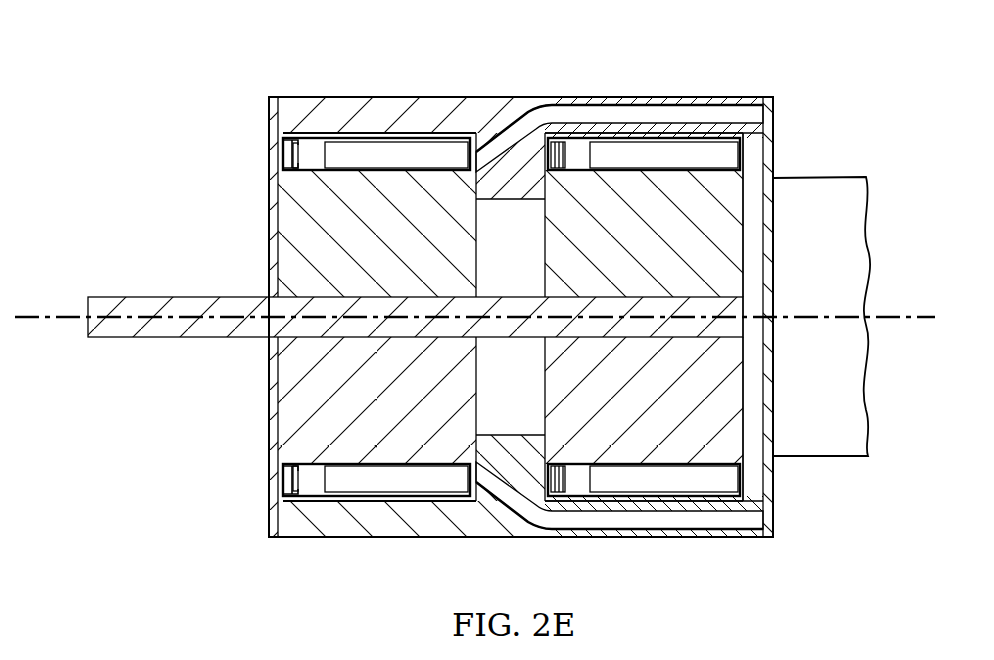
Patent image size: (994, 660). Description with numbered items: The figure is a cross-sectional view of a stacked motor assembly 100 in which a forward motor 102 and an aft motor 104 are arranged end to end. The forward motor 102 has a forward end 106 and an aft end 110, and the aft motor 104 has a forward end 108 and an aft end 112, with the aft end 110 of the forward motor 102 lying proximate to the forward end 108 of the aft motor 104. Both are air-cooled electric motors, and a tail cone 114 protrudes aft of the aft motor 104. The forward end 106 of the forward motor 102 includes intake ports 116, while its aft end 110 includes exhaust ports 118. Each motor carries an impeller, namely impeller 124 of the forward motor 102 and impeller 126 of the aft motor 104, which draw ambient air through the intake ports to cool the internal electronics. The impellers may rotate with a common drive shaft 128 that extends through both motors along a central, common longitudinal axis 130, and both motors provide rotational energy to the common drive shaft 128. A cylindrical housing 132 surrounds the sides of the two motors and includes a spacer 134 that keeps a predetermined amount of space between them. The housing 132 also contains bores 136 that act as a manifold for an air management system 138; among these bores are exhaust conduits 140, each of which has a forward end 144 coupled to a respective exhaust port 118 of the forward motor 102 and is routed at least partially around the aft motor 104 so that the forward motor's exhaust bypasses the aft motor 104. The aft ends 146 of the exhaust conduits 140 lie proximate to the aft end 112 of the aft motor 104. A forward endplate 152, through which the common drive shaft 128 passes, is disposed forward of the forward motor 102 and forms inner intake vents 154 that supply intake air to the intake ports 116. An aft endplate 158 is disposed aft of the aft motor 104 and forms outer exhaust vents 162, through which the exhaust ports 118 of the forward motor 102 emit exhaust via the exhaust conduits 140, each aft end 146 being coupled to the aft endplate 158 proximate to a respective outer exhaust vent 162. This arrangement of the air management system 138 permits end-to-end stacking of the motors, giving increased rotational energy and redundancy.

The stacked motor assembly 100 is at (248, 70).
The forward motor 102 is at (290, 228).
The aft motor 104 is at (740, 227).
The forward end 106 is at (275, 415).
The forward end 108 is at (538, 400).
The aft end 110 is at (480, 240).
The aft end 112 is at (747, 283).
The tail cone 114 is at (812, 458).
The intake ports 116 is at (276, 151).
The exhaust ports 118 is at (348, 170).
The impeller 124 is at (305, 97).
The impeller 126 is at (578, 140).
The common drive shaft 128 is at (148, 297).
The longitudinal axis 130 is at (50, 312).
The cylindrical housing 132 is at (390, 537).
The spacer 134 is at (492, 135).
The bores 136 is at (622, 123).
The air management system 138 is at (668, 537).
The exhaust conduits 140 is at (692, 130).
The forward end 144 is at (487, 527).
The aft ends 146 is at (762, 520).
The forward endplate 152 is at (273, 352).
The inner intake vents 154 is at (273, 163).
The aft endplate 158 is at (770, 370).
The outer exhaust vents 162 is at (770, 117).